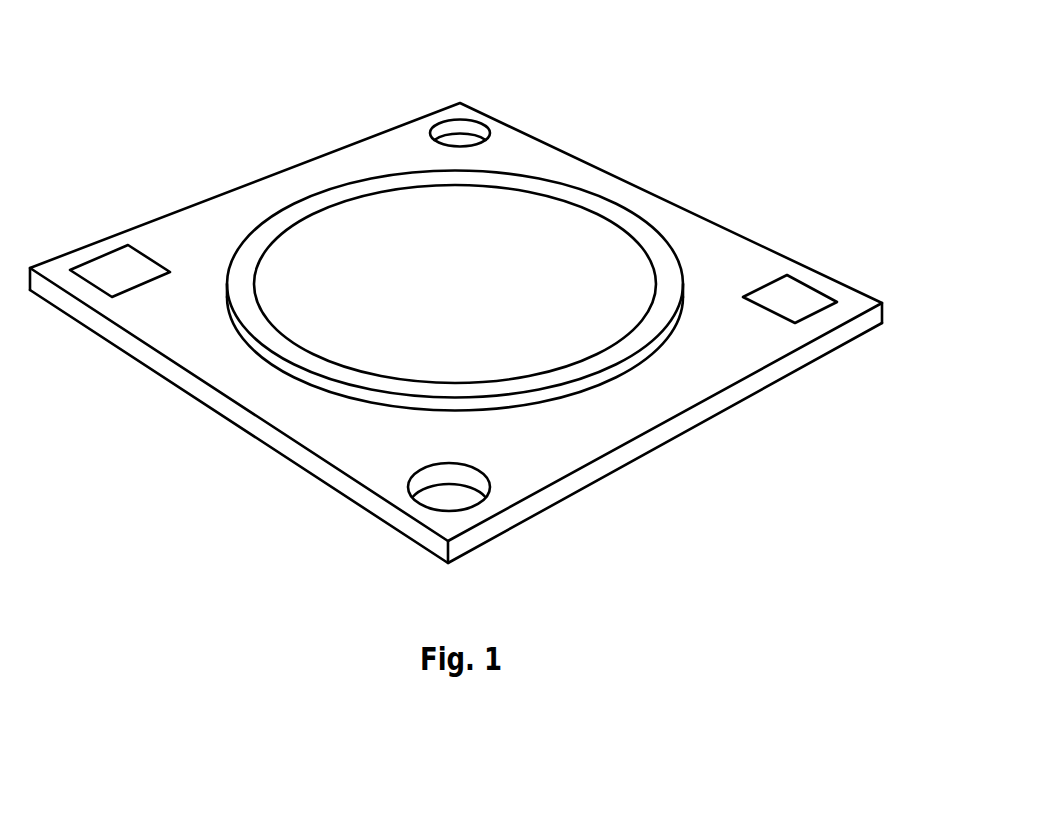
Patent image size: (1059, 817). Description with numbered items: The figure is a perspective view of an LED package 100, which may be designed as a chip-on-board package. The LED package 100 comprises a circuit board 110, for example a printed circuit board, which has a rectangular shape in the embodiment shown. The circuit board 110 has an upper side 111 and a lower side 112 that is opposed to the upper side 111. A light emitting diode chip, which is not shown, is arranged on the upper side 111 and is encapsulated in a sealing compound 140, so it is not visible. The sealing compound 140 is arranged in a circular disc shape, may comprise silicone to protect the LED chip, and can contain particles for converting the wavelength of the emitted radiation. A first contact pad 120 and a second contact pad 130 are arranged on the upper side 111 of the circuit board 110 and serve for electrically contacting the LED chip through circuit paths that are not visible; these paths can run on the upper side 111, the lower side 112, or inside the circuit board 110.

The LED package 100 is at (148, 47).
The circuit board 110 is at (334, 478).
The upper side 111 is at (243, 384).
The lower side 112 is at (277, 450).
The first contact pad 120 is at (795, 293).
The second contact pad 130 is at (110, 273).
The sealing compound 140 is at (528, 280).